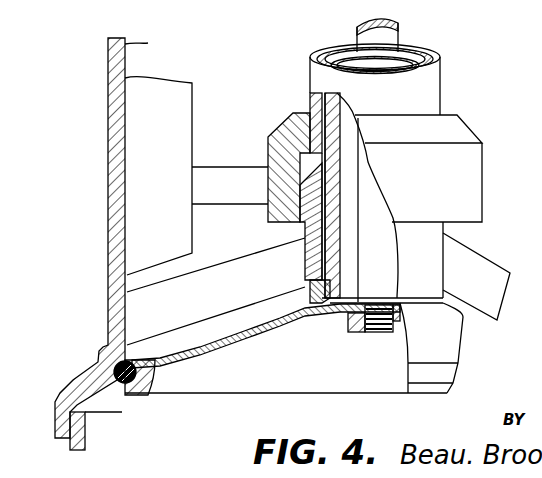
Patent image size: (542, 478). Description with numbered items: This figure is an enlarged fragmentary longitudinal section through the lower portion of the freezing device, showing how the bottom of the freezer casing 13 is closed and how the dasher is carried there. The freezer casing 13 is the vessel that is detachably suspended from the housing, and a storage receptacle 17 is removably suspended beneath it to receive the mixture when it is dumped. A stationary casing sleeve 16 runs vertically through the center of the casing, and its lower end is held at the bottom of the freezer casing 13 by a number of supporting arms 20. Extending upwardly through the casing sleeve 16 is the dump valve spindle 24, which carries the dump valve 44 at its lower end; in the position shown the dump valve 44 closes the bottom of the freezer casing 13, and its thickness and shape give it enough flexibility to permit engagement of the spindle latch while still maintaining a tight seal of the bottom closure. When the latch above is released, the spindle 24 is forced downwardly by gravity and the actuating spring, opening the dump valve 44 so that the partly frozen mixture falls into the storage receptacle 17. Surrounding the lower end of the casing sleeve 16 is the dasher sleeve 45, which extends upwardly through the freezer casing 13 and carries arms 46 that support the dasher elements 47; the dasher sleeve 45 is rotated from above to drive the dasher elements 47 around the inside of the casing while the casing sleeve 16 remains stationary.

The freezer casing 13 is at (117, 205).
The casing sleeve 16 is at (312, 102).
The storage receptacle 17 is at (103, 453).
The supporting arms 20 is at (140, 310).
The dump valve spindle 24 is at (392, 36).
The dump valve 44 is at (250, 337).
The dasher sleeve 45 is at (433, 88).
The arms 46 is at (247, 155).
The dasher elements 47 is at (178, 112).